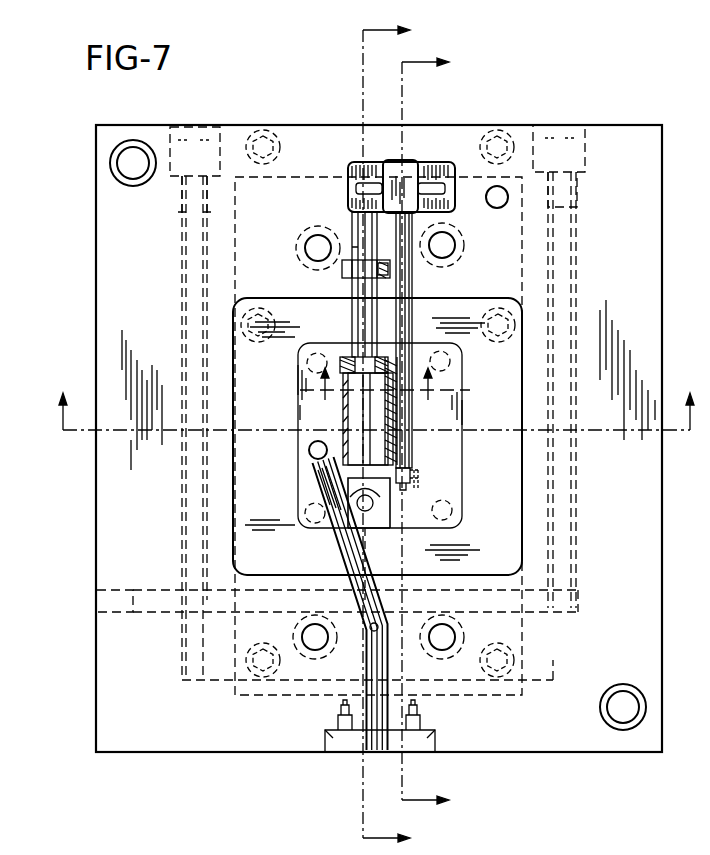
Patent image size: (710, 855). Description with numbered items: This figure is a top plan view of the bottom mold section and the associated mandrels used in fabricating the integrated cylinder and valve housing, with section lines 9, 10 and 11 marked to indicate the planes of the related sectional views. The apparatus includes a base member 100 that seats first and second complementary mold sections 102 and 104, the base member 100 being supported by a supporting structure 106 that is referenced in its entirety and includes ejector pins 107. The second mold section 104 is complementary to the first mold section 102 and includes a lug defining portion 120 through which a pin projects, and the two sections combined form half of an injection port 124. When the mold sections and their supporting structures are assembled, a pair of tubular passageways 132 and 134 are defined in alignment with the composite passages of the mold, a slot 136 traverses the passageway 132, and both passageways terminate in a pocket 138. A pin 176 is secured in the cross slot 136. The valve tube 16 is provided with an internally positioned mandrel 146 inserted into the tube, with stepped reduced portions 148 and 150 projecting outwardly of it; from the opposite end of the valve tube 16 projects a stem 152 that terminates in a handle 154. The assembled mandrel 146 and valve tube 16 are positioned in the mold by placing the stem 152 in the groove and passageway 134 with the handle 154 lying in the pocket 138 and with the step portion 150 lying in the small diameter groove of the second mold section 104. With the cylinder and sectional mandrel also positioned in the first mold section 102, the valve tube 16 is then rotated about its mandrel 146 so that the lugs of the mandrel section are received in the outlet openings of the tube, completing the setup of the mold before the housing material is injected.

The section line 9- 9 is at (416, 434).
The section line 10- 10 is at (374, 434).
The section line 11- 11 is at (377, 426).
The valve tube 16 is at (468, 441).
The base member 100 is at (513, 495).
The first mold section 102 is at (300, 375).
The second mold section 104 is at (302, 486).
The supporting structure 106 is at (250, 118).
The ejector pins 107 is at (455, 354).
The lug defining portion 120 is at (372, 515).
The injection port 124 is at (352, 545).
The tubular passageway 132 is at (350, 218).
The tubular passageway 134 is at (415, 212).
The slot 136 is at (340, 270).
The pocket 138 is at (448, 165).
The mandrel 146 is at (418, 416).
The stepped reduced portion 148 is at (405, 478).
The stepped reduced portion 150 is at (405, 498).
The stem 152 is at (405, 290).
The handle 154 is at (408, 165).
The pin 176 is at (386, 268).